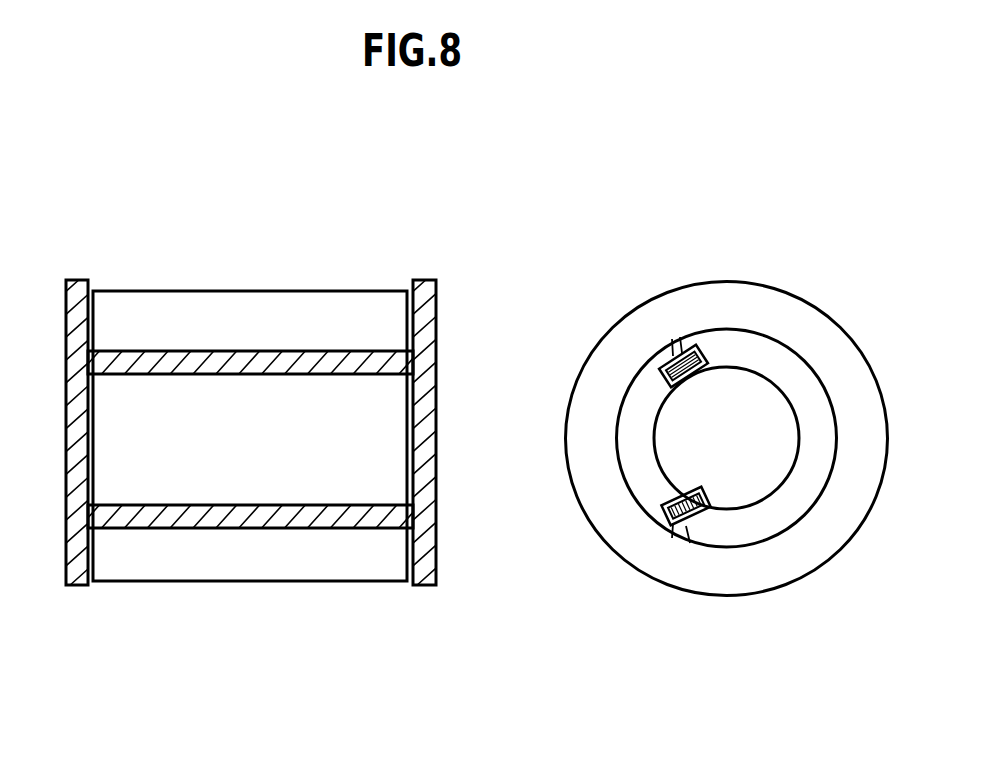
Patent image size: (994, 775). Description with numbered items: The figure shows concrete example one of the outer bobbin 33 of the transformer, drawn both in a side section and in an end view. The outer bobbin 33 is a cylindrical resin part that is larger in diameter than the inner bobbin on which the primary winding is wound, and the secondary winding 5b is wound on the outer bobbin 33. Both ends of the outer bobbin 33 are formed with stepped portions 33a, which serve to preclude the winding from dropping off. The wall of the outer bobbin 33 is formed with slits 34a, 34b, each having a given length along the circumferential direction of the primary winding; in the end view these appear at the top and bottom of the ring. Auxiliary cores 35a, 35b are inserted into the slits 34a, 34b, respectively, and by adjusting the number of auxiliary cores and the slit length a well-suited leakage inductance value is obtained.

The secondary winding 5b is at (258, 291).
The outer bobbin 33 is at (278, 528).
The stepped portions 33a is at (422, 281).
The slit 34a is at (676, 338).
The auxiliary core 35a is at (672, 348).
The slit 34b is at (678, 524).
The auxiliary core 35b is at (687, 528).